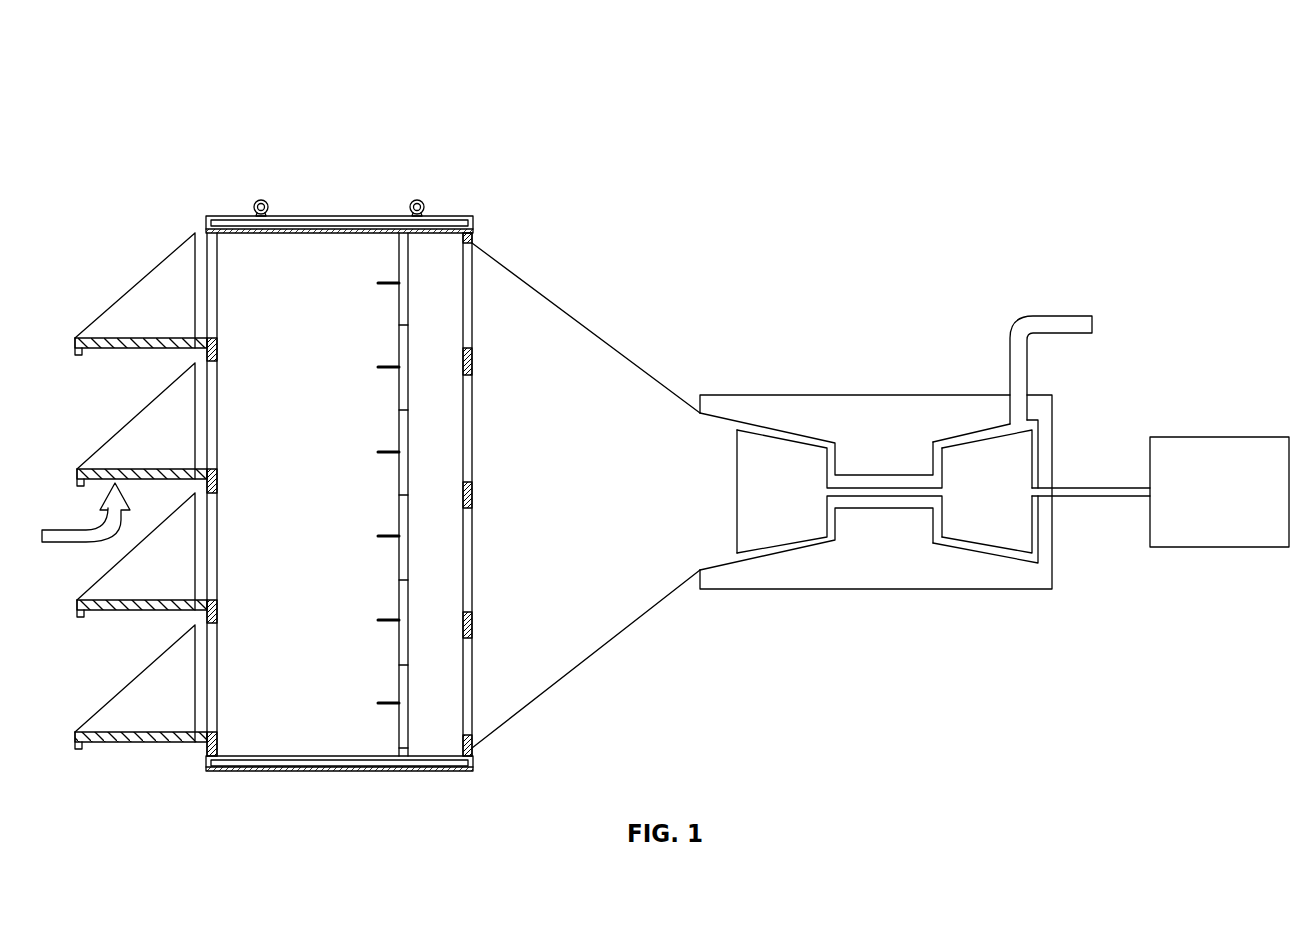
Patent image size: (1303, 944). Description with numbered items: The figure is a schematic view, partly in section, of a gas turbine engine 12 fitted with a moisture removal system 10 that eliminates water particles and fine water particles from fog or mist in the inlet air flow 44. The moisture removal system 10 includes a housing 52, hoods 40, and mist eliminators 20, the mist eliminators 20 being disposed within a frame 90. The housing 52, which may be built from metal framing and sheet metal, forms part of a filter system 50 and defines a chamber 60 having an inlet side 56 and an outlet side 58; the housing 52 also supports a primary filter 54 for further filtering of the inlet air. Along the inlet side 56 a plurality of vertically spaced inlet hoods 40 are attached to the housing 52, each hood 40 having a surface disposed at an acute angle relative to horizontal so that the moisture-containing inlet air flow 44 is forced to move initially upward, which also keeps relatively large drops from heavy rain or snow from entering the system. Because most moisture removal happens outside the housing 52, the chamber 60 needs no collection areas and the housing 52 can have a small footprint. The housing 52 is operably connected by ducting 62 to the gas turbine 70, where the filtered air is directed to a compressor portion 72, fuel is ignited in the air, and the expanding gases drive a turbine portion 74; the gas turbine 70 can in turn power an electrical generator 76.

The moisture removal system 10 is at (386, 135).
The gas turbine engine 12 is at (968, 98).
The mist eliminator 20 is at (118, 350).
The hood 40 is at (137, 282).
The inlet air flow 44 is at (45, 544).
The filter system 50 is at (461, 204).
The housing 52 is at (341, 216).
The primary filter 54 is at (422, 269).
The inlet side 56 is at (213, 297).
The outlet side 58 is at (465, 297).
The chamber 60 is at (345, 497).
The ducting 62 is at (603, 340).
The gas turbine 70 is at (896, 379).
The compressor portion 72 is at (777, 528).
The turbine portion 74 is at (972, 530).
The electrical generator 76 is at (1212, 437).
The frame 90 is at (110, 350).